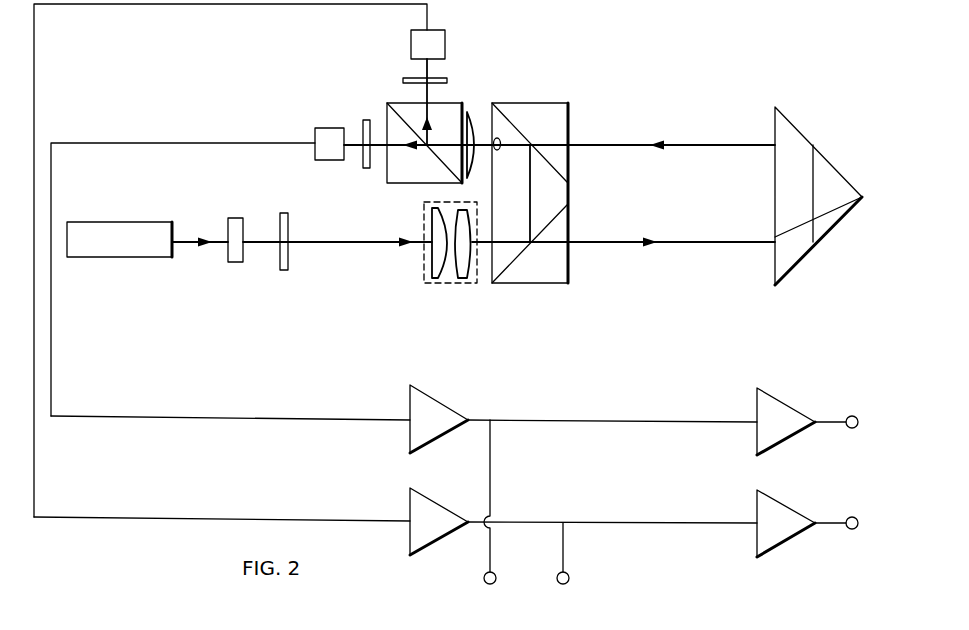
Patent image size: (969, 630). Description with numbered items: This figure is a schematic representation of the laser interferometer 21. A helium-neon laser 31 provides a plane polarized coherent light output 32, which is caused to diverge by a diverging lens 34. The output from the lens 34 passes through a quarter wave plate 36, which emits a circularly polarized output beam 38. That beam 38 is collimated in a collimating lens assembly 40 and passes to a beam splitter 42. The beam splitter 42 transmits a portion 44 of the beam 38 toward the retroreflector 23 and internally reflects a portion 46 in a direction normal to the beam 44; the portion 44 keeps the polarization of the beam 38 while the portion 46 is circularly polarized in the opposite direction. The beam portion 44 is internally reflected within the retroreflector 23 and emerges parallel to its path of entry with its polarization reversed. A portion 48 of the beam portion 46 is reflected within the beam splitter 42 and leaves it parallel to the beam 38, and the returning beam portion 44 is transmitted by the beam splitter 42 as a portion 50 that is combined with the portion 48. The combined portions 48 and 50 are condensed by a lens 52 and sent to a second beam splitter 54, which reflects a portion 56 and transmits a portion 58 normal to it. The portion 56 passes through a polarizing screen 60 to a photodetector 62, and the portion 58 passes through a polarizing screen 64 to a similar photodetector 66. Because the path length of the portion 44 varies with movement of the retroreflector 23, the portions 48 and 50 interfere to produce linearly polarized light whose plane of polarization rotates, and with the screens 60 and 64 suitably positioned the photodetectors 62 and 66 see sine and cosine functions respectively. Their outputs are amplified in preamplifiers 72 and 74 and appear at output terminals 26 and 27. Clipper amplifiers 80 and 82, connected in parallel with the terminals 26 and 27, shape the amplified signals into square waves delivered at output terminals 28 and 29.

The laser interferometer 21 is at (309, 302).
The retroreflector 23 is at (853, 213).
The output terminal 26 is at (494, 583).
The output terminal 27 is at (567, 583).
The output terminal 28 is at (862, 409).
The output terminal 29 is at (862, 512).
The helium-neon laser 31 is at (87, 257).
The plane polarized coherent light output 32 is at (185, 243).
The diverging lens 34 is at (235, 218).
The quarter wave plate 36 is at (288, 220).
The circularly polarized output beam 38 is at (365, 243).
The collimating lens assembly 40 is at (449, 287).
The beam splitter 42 is at (546, 209).
The beam portion 44 is at (688, 135).
The beam portion 46 is at (531, 226).
The beam portion 48 is at (496, 150).
The beam portion 50 is at (524, 148).
The lens 52 is at (469, 113).
The beam splitter 54 is at (440, 103).
The beam portion 56 is at (431, 134).
The beam portion 58 is at (419, 150).
The polarizing screen 60 is at (410, 78).
The photodetector 62 is at (433, 30).
The polarizing screen 64 is at (369, 124).
The photodetector 66 is at (335, 128).
The preamplifier 72 is at (438, 403).
The preamplifier 74 is at (438, 503).
The clipper amplifier 80 is at (789, 406).
The clipper amplifier 82 is at (781, 504).